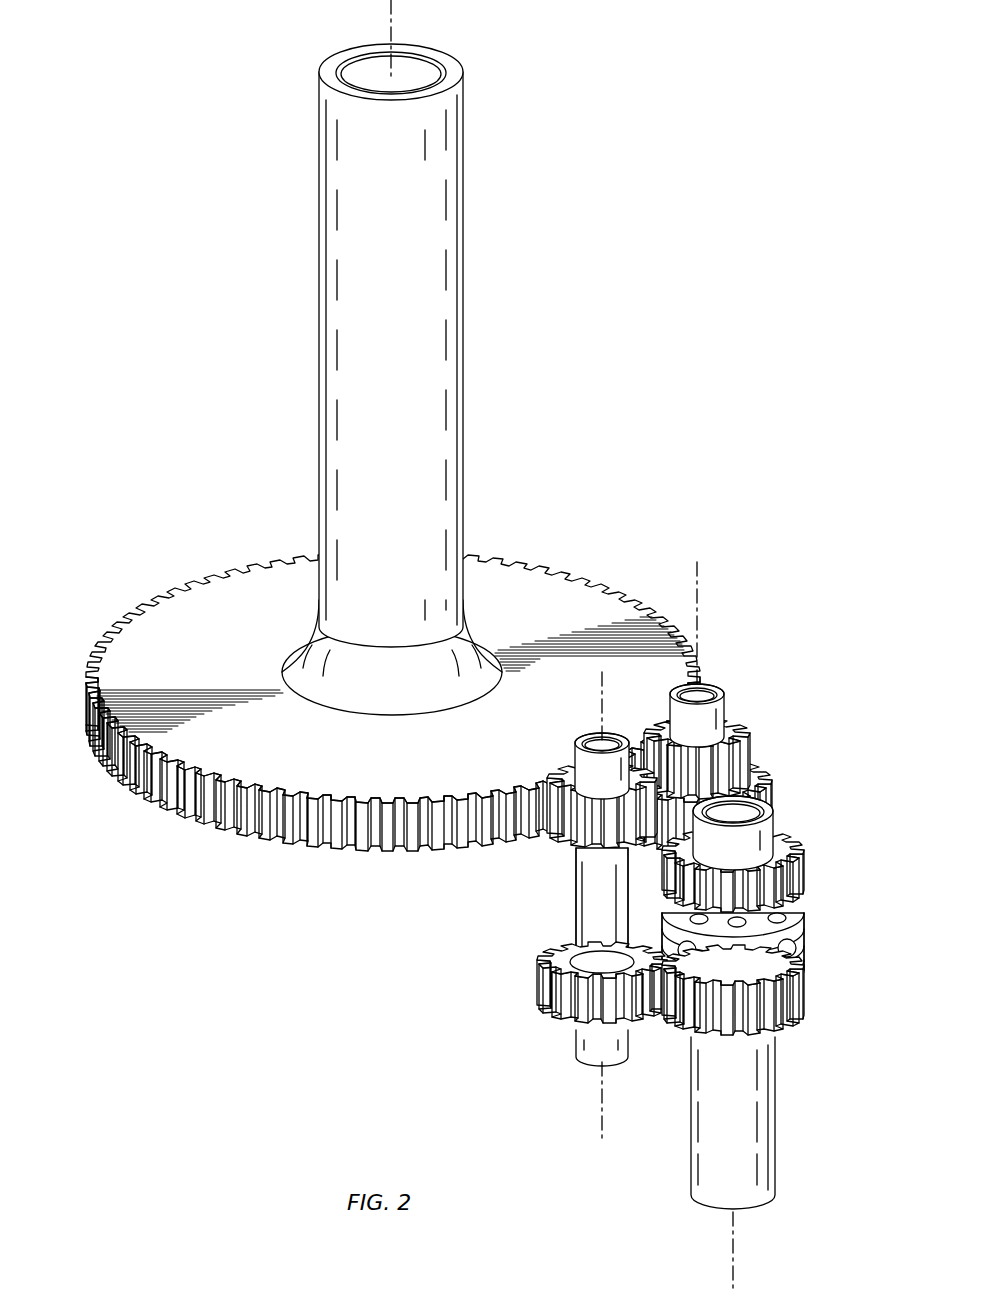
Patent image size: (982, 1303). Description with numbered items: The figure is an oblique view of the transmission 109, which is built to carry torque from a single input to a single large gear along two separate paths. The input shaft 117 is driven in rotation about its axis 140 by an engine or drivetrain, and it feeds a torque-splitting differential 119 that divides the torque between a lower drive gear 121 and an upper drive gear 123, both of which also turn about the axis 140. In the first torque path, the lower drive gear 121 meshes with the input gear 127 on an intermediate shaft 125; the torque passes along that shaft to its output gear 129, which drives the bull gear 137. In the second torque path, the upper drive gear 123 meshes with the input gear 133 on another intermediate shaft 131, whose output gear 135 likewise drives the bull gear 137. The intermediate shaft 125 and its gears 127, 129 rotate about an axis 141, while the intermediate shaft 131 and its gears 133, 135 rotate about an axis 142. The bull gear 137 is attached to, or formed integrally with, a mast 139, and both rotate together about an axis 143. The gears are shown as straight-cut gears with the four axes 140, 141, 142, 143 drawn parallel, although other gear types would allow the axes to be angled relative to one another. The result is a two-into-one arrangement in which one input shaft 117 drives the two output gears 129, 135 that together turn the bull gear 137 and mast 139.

The transmission 109 is at (678, 88).
The input shaft 117 is at (777, 1115).
The torque-splitting differential mechanism 119 is at (812, 918).
The lower drive gear 121 is at (806, 1006).
The upper drive gear 123 is at (807, 855).
The intermediate shaft 125 is at (575, 896).
The input gear 127 is at (540, 990).
The output gear 129 is at (580, 858).
The intermediate shaft 131 is at (726, 700).
The input gear 133 is at (766, 772).
The output gear 135 is at (748, 743).
The bull gear 137 is at (225, 574).
The mast 139 is at (466, 341).
The axis 140 is at (736, 1275).
The axis 141 is at (600, 1127).
The axis 142 is at (700, 572).
The axis 143 is at (386, 24).